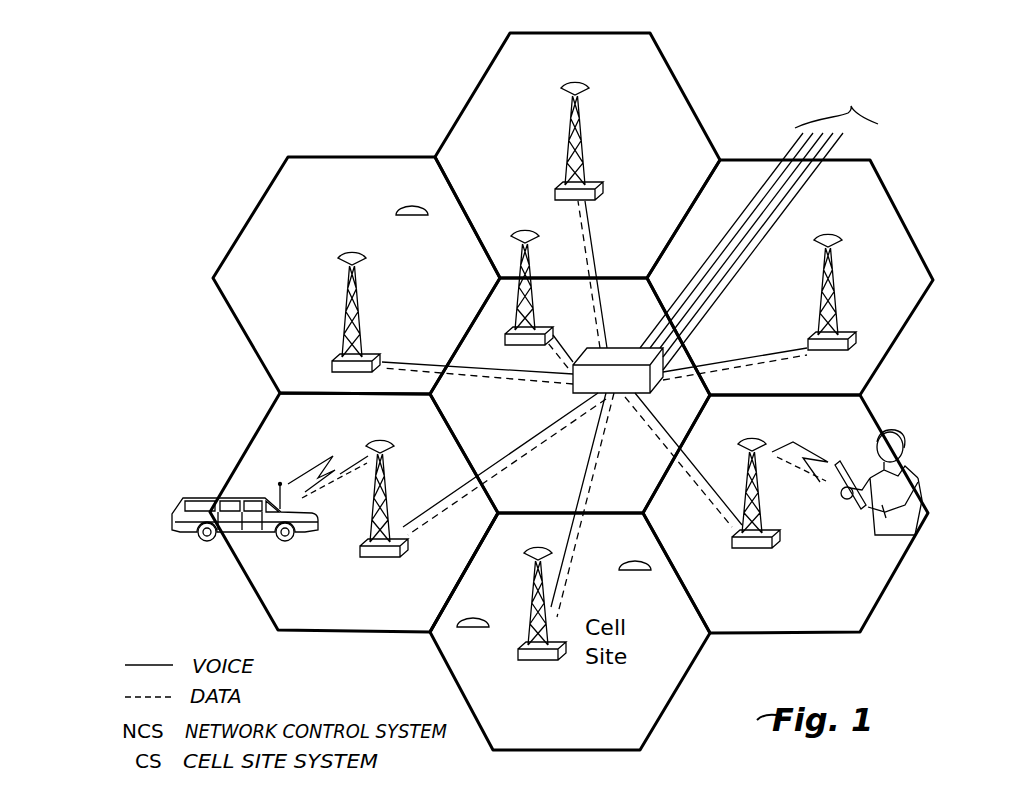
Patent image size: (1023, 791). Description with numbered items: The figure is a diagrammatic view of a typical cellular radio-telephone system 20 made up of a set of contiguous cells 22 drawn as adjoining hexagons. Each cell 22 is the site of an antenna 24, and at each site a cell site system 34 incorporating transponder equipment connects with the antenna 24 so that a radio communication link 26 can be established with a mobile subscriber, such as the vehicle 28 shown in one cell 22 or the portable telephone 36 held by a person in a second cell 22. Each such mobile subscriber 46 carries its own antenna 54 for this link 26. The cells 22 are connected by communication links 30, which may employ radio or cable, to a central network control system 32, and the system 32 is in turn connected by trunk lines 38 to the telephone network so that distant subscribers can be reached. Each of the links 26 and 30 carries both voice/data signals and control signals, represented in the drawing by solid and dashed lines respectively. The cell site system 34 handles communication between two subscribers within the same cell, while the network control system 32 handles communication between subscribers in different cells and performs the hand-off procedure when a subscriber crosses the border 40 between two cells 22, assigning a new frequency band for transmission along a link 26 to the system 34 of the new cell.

The cellular radio-telephone system 20 is at (362, 100).
The cell 22 is at (434, 125).
The antenna 24 is at (586, 140).
The radio communication link 26 is at (317, 470).
The vehicle 28 is at (199, 498).
The communication link 30 is at (748, 362).
The network control system 32 is at (573, 390).
The cell site system 34 is at (358, 551).
The portable telephone 36 is at (855, 502).
The trunk lines 38 is at (857, 141).
The border 40 is at (471, 557).
The mobile subscribers 46 is at (407, 206).
The antenna 54 is at (279, 486).